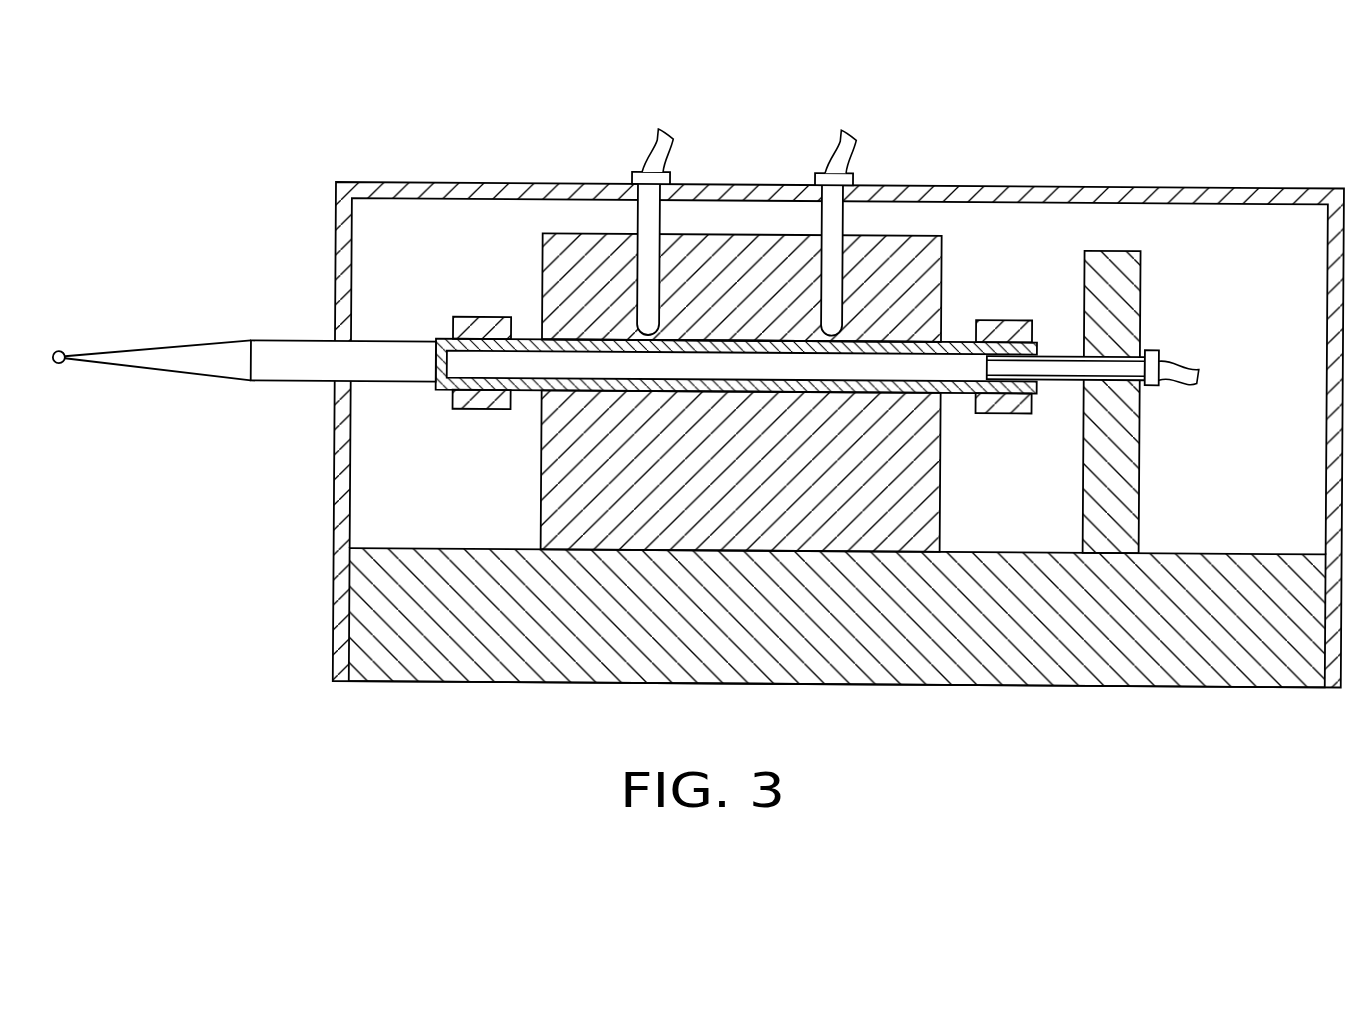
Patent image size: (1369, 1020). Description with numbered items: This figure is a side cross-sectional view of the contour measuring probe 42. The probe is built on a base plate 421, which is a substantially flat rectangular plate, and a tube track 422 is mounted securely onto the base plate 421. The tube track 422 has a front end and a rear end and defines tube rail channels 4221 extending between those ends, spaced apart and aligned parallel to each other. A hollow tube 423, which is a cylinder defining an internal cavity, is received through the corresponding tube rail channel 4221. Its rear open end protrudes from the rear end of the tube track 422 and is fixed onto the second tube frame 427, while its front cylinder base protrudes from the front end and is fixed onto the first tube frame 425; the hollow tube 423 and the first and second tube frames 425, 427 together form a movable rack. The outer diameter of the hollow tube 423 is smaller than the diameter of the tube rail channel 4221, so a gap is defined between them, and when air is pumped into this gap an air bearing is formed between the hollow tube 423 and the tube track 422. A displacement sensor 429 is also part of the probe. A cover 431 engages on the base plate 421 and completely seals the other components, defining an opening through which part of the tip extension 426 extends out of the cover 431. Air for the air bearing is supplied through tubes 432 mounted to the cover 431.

The contour measuring probe 42 is at (698, 403).
The base plate 421 is at (428, 652).
The tube track 422 is at (892, 268).
The tube rail channel 4221 is at (743, 340).
The hollow tube 423 is at (580, 343).
The first tube frame 425 is at (478, 324).
The tip extension 426 is at (307, 367).
The second tube frame 427 is at (1008, 330).
The displacement sensor 429 is at (1122, 283).
The cover 431 is at (1245, 198).
The tubes 432 is at (652, 218).